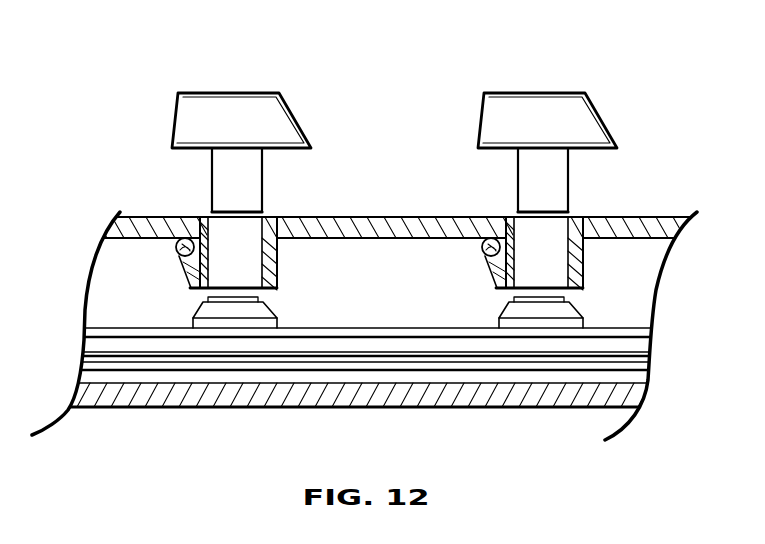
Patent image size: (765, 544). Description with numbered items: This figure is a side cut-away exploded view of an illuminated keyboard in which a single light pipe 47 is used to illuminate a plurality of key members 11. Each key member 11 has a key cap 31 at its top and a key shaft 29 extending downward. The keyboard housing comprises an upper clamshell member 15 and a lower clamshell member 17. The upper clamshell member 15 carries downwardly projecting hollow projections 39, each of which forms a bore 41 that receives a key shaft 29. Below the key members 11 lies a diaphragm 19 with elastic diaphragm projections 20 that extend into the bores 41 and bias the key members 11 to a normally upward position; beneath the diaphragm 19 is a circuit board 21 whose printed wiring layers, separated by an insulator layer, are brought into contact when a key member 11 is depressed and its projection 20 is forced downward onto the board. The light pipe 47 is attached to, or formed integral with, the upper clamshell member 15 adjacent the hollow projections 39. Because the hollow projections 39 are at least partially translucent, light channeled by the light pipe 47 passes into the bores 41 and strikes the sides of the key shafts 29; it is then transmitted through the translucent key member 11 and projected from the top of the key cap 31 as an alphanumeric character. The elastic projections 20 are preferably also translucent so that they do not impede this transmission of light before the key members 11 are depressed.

The key member 11 is at (414, 129).
The upper clamshell member 15 is at (641, 216).
The lower clamshell member 17 is at (500, 408).
The diaphragm 19 is at (132, 328).
The elastic diaphragm projection 20 is at (278, 312).
The circuit board 21 is at (658, 355).
The key shaft 29 is at (216, 180).
The key cap 31 is at (197, 105).
The hollow projection 39 is at (281, 268).
The bore 41 is at (262, 216).
The light pipe 47 is at (177, 251).